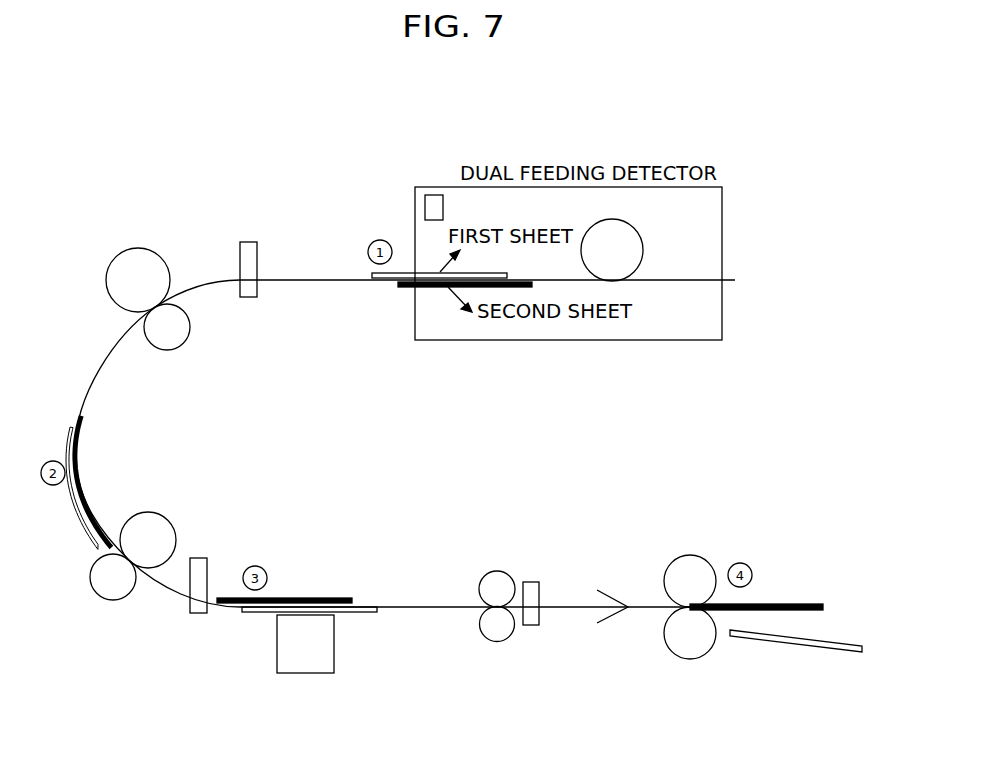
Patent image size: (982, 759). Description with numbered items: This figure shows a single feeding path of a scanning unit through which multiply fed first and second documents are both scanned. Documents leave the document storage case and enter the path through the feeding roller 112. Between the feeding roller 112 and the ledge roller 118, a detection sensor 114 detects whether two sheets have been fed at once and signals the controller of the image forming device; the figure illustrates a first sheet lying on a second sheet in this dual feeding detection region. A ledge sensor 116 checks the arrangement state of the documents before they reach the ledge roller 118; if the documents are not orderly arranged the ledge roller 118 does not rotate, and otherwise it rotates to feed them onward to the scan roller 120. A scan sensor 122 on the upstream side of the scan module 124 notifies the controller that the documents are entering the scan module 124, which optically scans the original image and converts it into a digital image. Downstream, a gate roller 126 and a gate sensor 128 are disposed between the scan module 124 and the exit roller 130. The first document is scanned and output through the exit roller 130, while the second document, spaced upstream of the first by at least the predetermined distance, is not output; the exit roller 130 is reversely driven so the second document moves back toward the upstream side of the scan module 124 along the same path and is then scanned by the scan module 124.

The feeding roller 112 is at (637, 228).
The detection sensor 114 is at (434, 195).
The ledge sensor 116 is at (248, 242).
The ledge roller 118 is at (127, 248).
The scan roller 120 is at (112, 592).
The scan sensor 122 is at (199, 613).
The scan module 124 is at (305, 673).
The gate roller 126 is at (497, 641).
The gate sensor 128 is at (530, 625).
The exit roller 130 is at (690, 659).